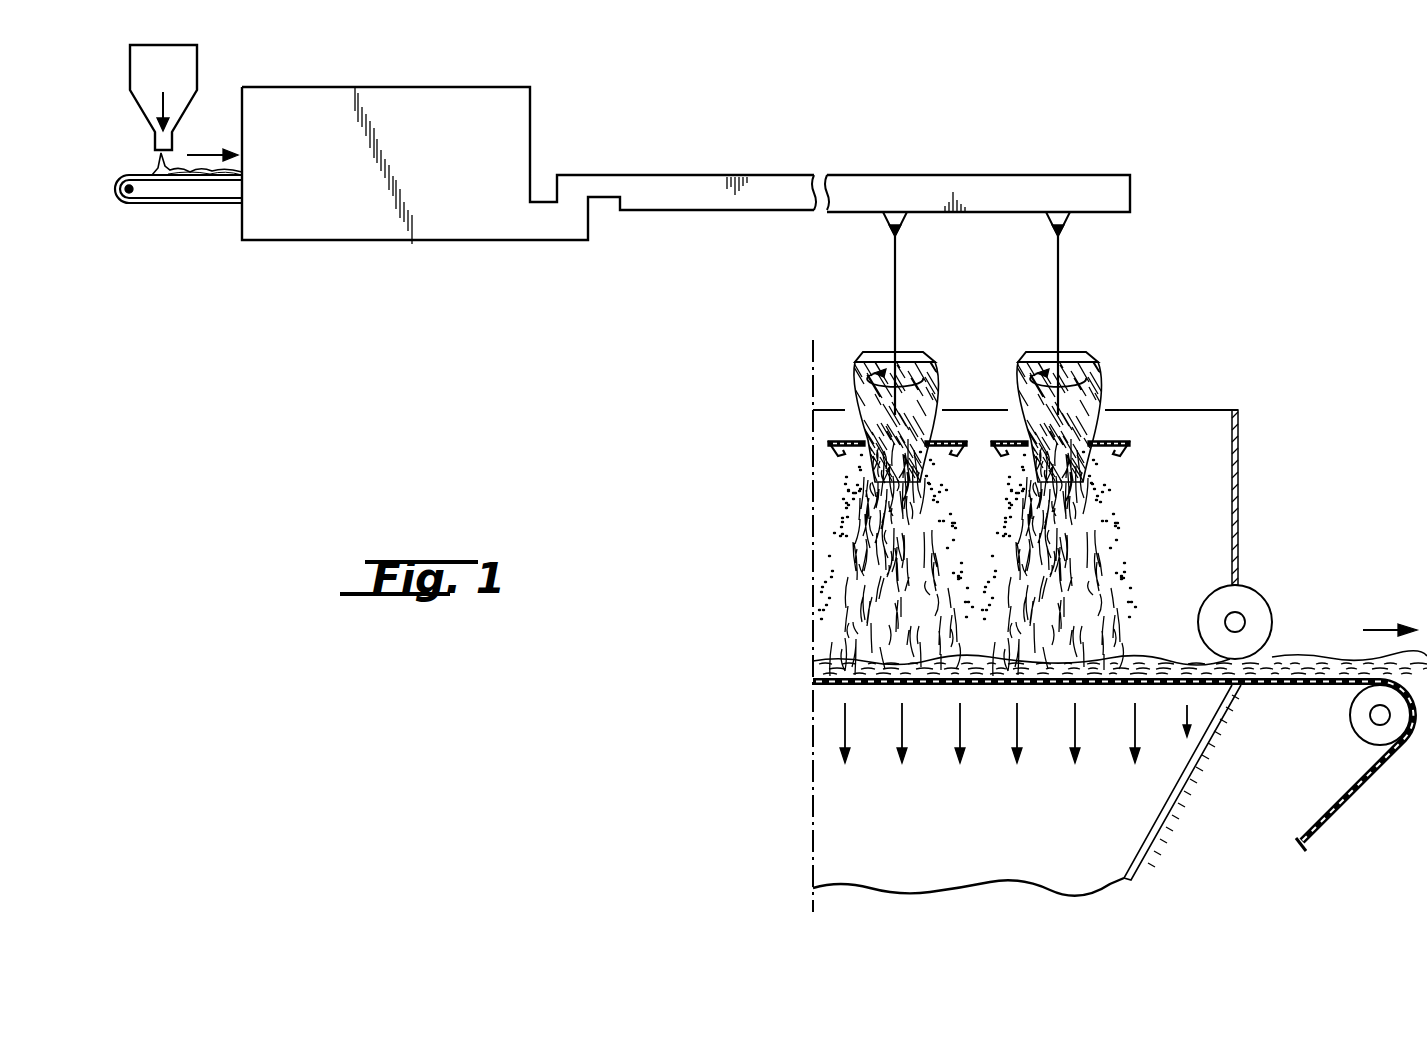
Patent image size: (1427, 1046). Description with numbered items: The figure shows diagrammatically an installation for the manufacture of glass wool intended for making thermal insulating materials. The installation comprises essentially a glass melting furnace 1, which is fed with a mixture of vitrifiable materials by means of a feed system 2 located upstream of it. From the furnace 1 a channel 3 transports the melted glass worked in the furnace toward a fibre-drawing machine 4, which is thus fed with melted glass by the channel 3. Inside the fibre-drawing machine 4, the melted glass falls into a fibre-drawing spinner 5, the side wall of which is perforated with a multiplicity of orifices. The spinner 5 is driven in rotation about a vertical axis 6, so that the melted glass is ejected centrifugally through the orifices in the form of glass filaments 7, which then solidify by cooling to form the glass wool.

The glass melting furnace 1 is at (465, 98).
The feed system 2 is at (168, 227).
The channel 3 is at (697, 183).
The fibre-drawing machine 4 is at (1185, 359).
The fibre-drawing spinner 5 is at (1103, 310).
The vertical axis 6 is at (1138, 380).
The glass filaments 7 is at (1128, 343).